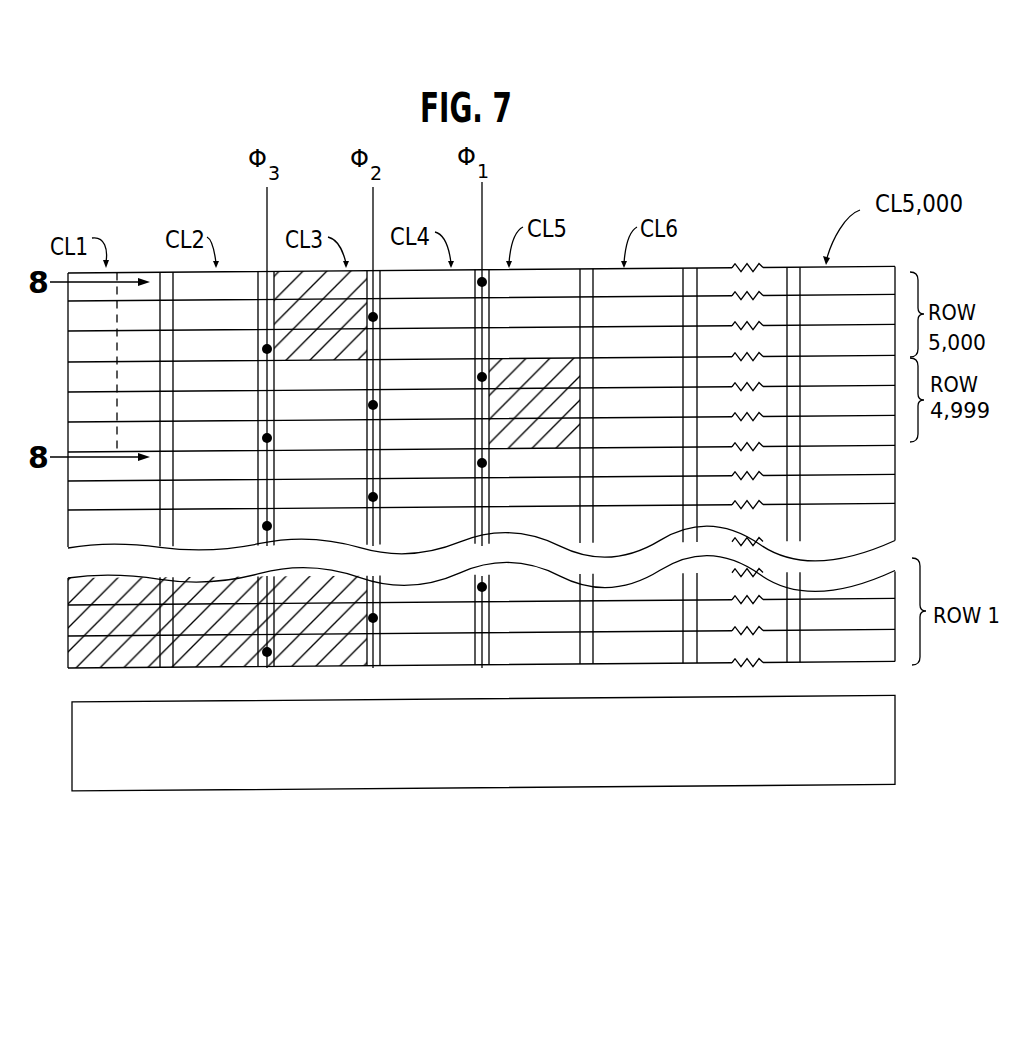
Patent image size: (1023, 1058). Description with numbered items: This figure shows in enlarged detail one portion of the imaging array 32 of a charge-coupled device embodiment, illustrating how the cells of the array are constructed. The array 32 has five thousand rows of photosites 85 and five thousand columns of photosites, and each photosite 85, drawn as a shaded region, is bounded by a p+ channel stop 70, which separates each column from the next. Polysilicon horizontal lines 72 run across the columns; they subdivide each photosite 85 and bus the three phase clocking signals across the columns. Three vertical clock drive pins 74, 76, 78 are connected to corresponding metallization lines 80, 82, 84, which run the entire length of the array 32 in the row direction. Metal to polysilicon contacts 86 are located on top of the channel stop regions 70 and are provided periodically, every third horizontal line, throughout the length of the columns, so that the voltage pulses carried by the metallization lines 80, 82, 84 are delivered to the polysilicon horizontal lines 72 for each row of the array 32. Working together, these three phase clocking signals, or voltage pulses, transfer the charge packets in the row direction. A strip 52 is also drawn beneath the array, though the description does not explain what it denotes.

The imaging array 32 is at (753, 234).
The common electrode strip 52 is at (427, 788).
The p+ channel stop 70 is at (588, 285).
The polysilicon horizontal lines 72 is at (340, 443).
The vertical clock drive pin 74 is at (265, 218).
The vertical clock drive pin 76 is at (370, 237).
The vertical clock drive pin 78 is at (480, 223).
The metallization line 80 is at (267, 580).
The metallization line 82 is at (368, 574).
The metallization line 84 is at (483, 583).
The photosite 85 is at (277, 313).
The metal to polysilicon contact 86 is at (263, 348).